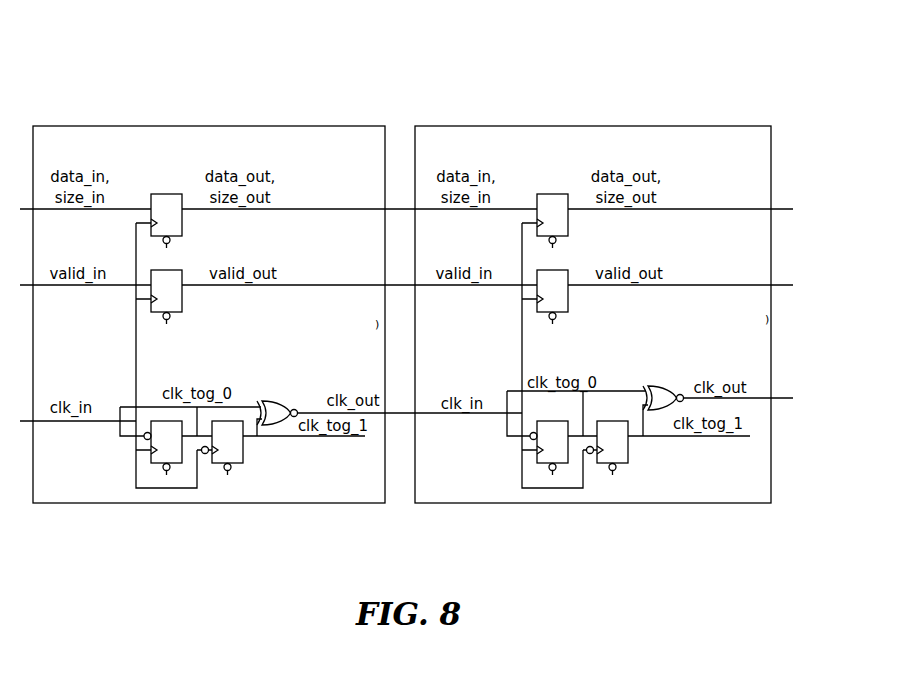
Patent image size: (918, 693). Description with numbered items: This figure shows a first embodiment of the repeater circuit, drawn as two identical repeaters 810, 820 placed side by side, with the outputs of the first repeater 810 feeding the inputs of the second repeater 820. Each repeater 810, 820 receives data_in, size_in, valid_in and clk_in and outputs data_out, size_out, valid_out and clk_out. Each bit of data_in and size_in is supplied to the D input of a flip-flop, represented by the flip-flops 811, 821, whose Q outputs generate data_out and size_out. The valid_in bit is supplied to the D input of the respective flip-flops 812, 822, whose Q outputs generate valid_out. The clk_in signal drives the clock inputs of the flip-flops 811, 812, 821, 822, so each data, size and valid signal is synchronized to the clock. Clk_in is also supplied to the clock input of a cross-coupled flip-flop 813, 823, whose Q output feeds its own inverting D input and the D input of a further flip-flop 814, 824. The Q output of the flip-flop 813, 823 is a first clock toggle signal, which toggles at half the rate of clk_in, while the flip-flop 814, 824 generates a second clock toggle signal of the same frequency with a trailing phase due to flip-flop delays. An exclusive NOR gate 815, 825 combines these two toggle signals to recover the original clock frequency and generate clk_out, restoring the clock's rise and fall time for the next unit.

The repeater 810 is at (231, 126).
The flip-flop 811 is at (163, 194).
The flip-flop 812 is at (182, 275).
The cross-coupled flip-flop 813 is at (162, 464).
The flip-flop 814 is at (217, 464).
The exclusive NOR gate 815 is at (278, 425).
The repeater 820 is at (613, 126).
The flip-flop 821 is at (556, 194).
The flip-flop 822 is at (568, 273).
The cross-coupled flip-flop 823 is at (541, 463).
The flip-flop 824 is at (606, 463).
The exclusive NOR gate 825 is at (658, 410).